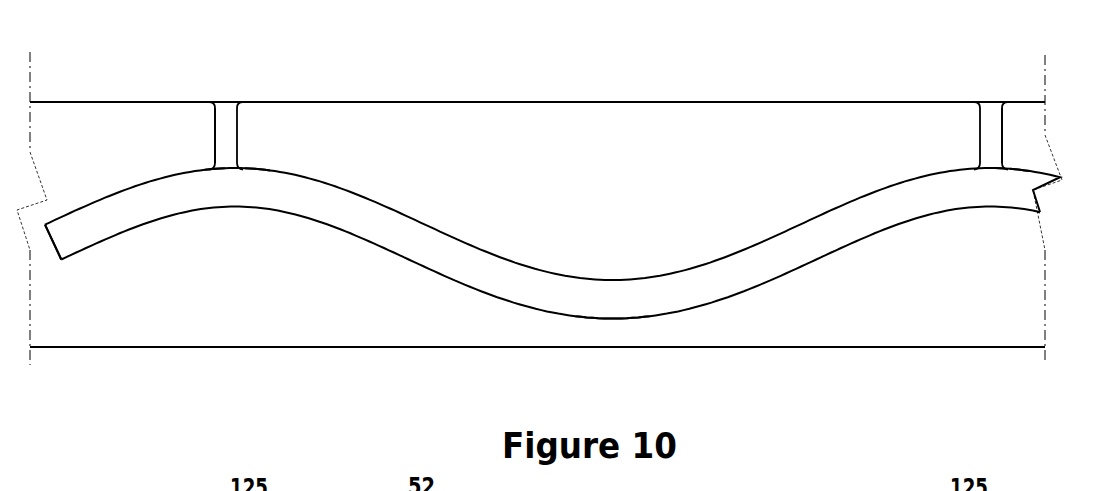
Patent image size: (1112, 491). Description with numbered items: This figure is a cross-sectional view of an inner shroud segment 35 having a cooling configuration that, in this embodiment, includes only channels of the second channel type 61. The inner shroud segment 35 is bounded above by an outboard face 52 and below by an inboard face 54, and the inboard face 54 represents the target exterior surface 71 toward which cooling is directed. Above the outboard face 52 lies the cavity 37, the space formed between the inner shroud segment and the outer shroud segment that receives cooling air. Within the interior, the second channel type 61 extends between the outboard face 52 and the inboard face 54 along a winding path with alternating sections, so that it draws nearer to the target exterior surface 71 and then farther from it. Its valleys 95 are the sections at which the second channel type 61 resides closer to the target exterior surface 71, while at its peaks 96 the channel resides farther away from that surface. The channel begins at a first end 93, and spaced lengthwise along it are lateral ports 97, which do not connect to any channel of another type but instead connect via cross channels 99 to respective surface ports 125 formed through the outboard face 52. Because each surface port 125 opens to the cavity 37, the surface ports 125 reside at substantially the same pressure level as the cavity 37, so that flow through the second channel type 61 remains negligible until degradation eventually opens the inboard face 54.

The inner shroud segment 35 is at (658, 187).
The cavity 37 is at (148, 80).
The outboard face 52 is at (412, 102).
The inboard face 54 is at (342, 347).
The second channel type 61 is at (495, 278).
The target exterior surface 71 is at (807, 347).
The first end 93 is at (49, 246).
The valleys 95 is at (650, 318).
The peaks 96 is at (266, 170).
The lateral ports 97 is at (219, 170).
The cross channels 99 is at (225, 132).
The surface ports 125 is at (230, 104).